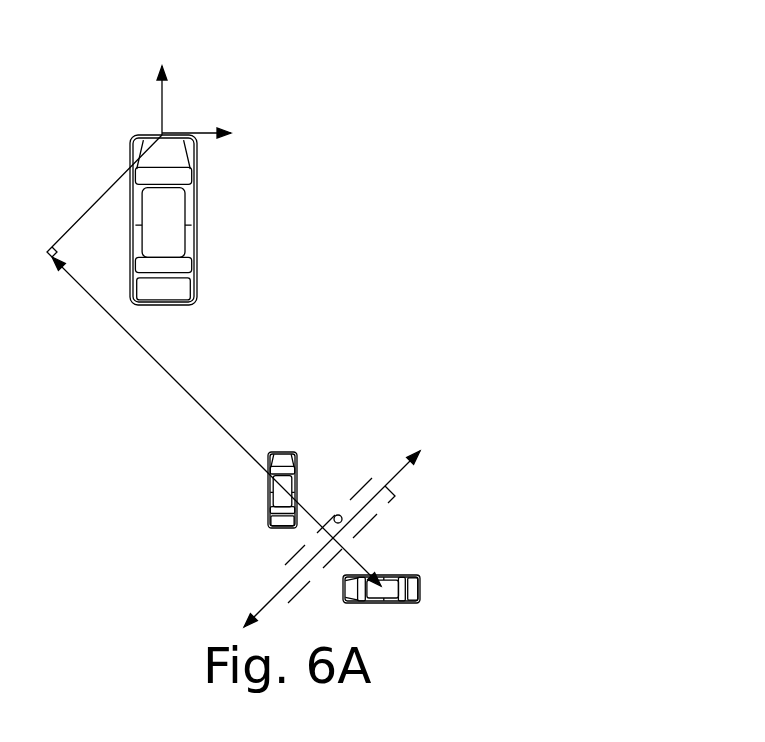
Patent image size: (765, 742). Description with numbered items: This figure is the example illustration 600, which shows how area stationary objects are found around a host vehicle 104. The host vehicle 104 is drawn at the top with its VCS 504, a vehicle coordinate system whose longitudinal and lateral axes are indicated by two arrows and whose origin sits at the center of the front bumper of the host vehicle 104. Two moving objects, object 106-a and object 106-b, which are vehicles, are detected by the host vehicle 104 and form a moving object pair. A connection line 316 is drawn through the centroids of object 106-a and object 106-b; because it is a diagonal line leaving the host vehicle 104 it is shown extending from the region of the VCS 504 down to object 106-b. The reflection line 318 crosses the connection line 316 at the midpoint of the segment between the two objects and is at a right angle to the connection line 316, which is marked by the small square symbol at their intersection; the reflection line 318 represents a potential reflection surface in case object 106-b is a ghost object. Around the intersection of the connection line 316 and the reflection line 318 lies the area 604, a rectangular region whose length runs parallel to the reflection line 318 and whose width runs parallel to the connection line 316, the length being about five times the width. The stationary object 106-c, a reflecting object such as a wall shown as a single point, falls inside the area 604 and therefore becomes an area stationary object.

The example illustration 600 is at (628, 48).
The host vehicle 104 is at (136, 156).
The VCS 504 is at (160, 113).
The connection line 316 is at (361, 573).
The reflection line 318 is at (420, 450).
The area 604 is at (280, 592).
The object 106-a is at (268, 505).
The object 106-b is at (419, 576).
The object 106-c is at (338, 515).